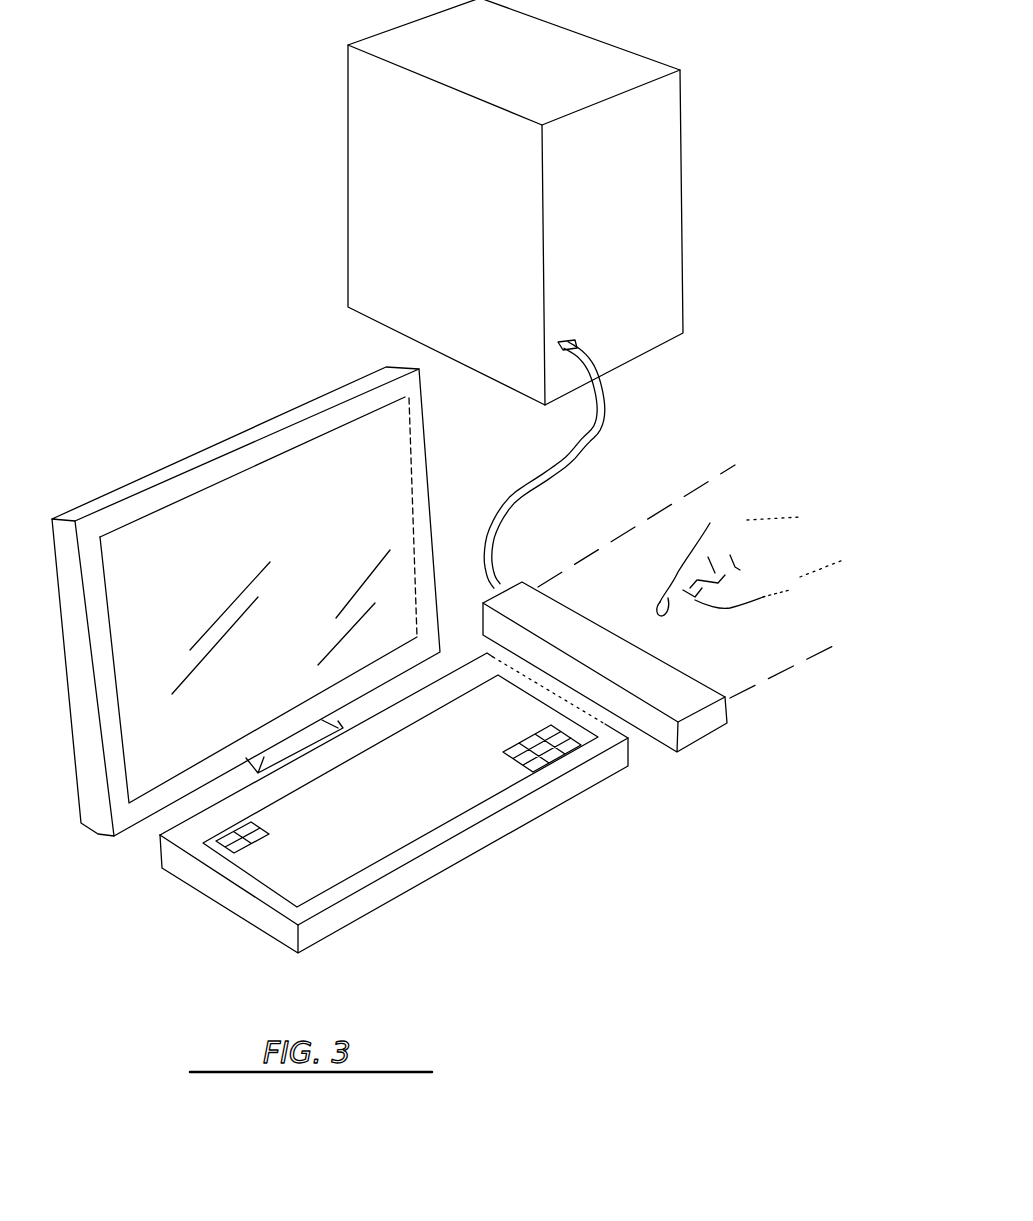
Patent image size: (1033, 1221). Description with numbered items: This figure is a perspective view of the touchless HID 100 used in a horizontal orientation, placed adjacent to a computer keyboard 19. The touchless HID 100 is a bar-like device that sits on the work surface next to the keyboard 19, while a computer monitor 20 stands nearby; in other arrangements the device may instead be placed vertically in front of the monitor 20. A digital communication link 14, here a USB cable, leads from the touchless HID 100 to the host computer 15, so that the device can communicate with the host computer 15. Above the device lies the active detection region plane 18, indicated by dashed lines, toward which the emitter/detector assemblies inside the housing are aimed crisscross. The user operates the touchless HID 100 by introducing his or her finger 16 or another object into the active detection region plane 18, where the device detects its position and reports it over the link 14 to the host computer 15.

The digital communication link 14 is at (605, 417).
The host computer 15 is at (683, 263).
The finger 16 is at (730, 613).
The active detection region plane 18 is at (676, 496).
The computer keyboard 19 is at (603, 780).
The computer monitor 20 is at (353, 391).
The touchless HID 100 is at (702, 731).